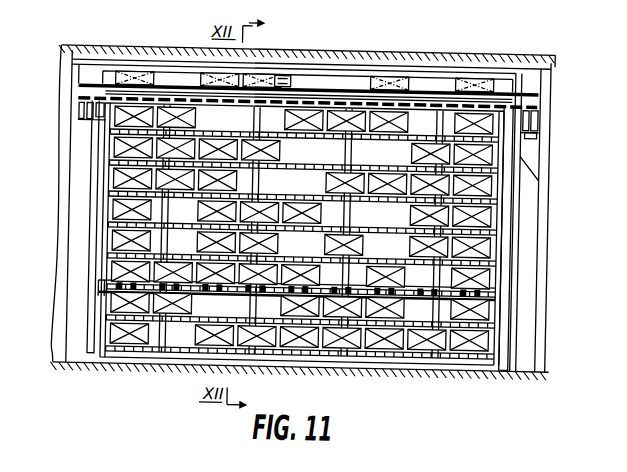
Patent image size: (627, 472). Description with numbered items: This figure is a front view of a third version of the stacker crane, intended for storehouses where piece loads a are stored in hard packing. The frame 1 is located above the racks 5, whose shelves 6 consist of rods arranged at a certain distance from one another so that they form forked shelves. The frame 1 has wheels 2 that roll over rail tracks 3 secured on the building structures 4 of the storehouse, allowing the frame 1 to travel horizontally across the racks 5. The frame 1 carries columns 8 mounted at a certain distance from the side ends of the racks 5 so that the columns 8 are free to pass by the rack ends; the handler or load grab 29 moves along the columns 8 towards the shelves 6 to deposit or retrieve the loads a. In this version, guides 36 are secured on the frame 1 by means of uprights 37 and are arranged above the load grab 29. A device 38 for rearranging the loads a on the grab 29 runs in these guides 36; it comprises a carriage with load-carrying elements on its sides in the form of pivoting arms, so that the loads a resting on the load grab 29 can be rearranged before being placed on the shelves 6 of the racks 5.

The frame 1 is at (432, 97).
The wheels 2 is at (533, 120).
The rail tracks 3 is at (530, 132).
The building structures 4 is at (541, 222).
The racks 5 is at (350, 156).
The shelves 6 is at (321, 161).
The columns 8 is at (507, 330).
The load grab 29 is at (123, 308).
The guides 36 is at (497, 67).
The uprights 37 is at (516, 75).
The device for rearranging the loads 38 is at (283, 77).
The loads a is at (492, 272).